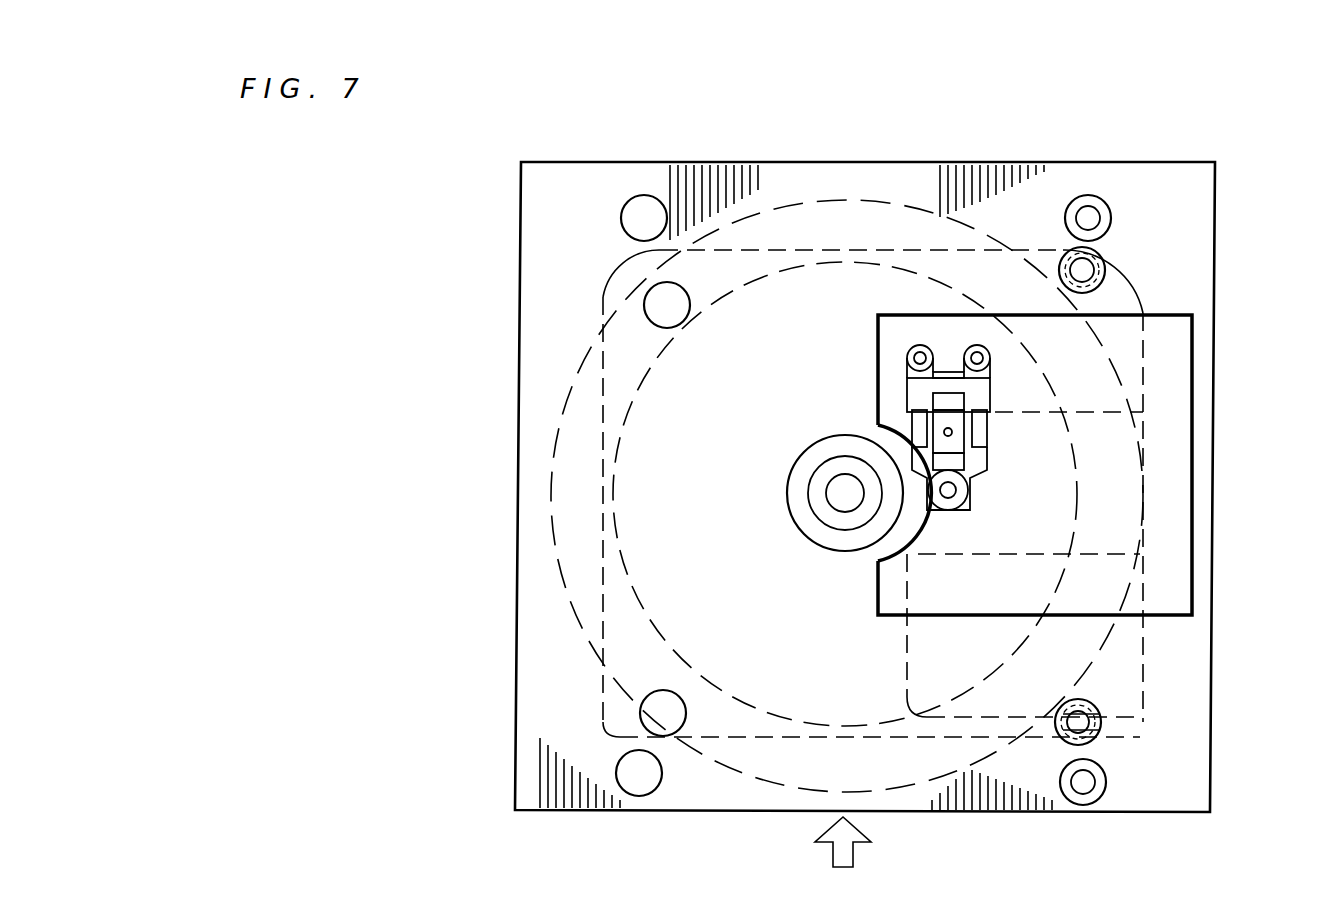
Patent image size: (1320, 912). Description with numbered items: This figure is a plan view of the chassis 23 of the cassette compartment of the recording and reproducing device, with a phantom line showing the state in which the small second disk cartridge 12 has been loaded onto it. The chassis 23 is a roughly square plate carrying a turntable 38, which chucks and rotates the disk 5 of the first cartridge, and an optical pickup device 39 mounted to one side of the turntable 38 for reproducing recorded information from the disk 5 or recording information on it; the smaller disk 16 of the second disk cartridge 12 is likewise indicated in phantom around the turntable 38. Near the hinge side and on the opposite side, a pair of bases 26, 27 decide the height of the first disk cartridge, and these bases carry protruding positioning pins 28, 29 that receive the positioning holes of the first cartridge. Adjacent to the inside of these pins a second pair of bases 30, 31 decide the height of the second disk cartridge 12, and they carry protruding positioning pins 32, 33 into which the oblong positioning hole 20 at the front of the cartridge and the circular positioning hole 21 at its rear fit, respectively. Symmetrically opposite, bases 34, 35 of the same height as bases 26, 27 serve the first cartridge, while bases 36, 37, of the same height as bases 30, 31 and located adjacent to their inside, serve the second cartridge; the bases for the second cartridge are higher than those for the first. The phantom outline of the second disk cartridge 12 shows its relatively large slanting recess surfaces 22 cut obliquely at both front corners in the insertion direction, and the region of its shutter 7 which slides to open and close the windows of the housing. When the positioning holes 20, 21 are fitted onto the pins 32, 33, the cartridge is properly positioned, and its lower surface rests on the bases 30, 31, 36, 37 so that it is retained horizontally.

The disk 5 is at (833, 200).
The shutter 7 is at (1077, 557).
The second disk cartridge 12 is at (760, 250).
The disk 16 is at (905, 262).
The positioning hole 20 is at (1100, 258).
The positioning hole 21 is at (1100, 724).
The slanting recess surfaces 22 is at (637, 270).
The chassis 23 is at (520, 443).
The base 26 is at (1088, 218).
The base 27 is at (1098, 790).
The positioning pin 28 is at (1095, 222).
The positioning pin 29 is at (1083, 785).
The base 30 is at (1105, 268).
The base 31 is at (1085, 705).
The positioning pin 32 is at (1108, 280).
The positioning pin 33 is at (1090, 738).
The base 34 is at (644, 205).
The base 35 is at (640, 778).
The base 36 is at (658, 313).
The base 37 is at (673, 737).
The turntable 38 is at (845, 493).
The optical pickup device 39 is at (975, 465).